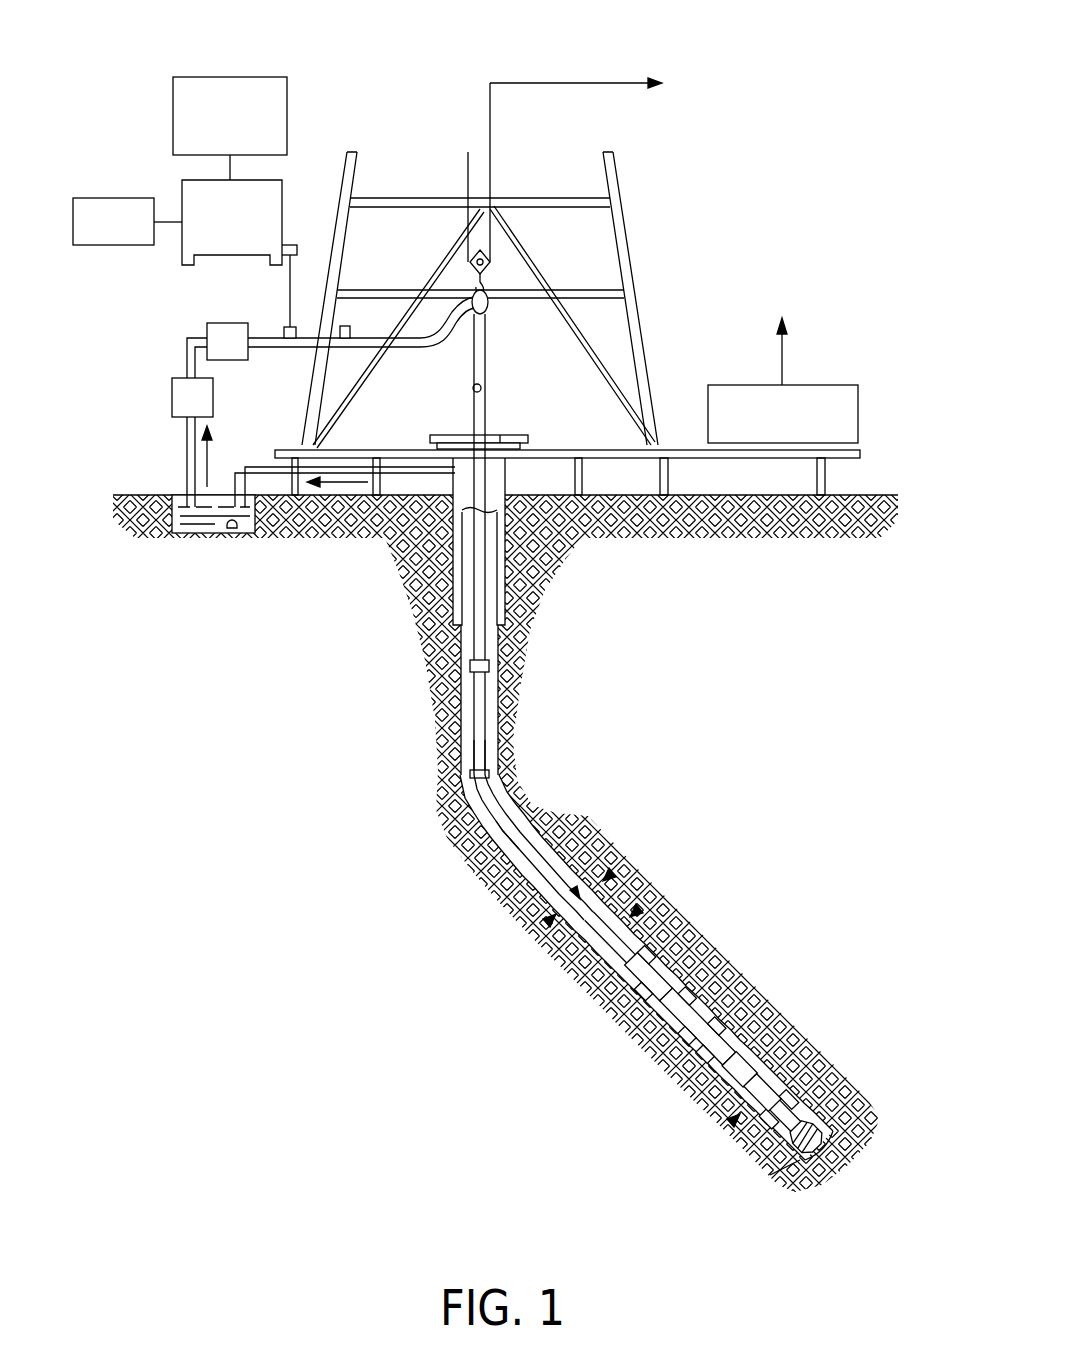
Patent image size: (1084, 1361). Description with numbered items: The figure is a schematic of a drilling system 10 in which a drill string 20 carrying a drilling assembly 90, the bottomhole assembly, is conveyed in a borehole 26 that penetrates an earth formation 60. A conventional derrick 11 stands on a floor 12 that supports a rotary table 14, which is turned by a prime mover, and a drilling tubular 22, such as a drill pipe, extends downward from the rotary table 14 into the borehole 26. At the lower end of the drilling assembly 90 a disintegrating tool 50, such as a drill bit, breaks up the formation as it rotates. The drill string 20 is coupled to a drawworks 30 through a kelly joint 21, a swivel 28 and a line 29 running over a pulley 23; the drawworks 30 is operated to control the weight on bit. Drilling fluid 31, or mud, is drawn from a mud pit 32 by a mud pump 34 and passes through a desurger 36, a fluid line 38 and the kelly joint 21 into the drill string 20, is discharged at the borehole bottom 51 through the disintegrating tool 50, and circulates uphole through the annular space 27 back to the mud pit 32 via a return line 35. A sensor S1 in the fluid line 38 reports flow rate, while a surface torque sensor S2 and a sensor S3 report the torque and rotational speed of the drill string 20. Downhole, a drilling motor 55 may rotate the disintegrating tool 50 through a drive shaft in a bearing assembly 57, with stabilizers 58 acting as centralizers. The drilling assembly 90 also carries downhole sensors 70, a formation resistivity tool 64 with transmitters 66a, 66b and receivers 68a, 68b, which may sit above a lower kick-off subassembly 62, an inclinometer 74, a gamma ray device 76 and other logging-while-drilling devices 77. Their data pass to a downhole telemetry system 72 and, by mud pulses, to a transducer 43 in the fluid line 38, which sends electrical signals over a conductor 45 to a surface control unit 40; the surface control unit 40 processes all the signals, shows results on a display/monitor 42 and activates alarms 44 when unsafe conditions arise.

The drilling system 10 is at (406, 112).
The derrick 11 is at (642, 298).
The floor 12 is at (656, 440).
The rotary table 14 is at (497, 432).
The drill string 20 is at (492, 642).
The kelly joint 21 is at (488, 372).
The drilling tubular 22 is at (461, 690).
The pulley 23 is at (492, 262).
The borehole 26 is at (498, 802).
The annular space 27 is at (514, 832).
The swivel 28 is at (468, 334).
The line 29 is at (490, 175).
The drawworks 30 is at (838, 385).
The drilling fluid 31 is at (172, 520).
The mud pit 32 is at (233, 531).
The mud pump 34 is at (172, 395).
The return line 35 is at (416, 473).
The desurger 36 is at (210, 323).
The fluid line 38 is at (300, 347).
The surface control unit 40 is at (182, 190).
The display/monitor 42 is at (207, 77).
The transducer 43 is at (290, 315).
The alarms 44 is at (130, 246).
The conductor 45 is at (289, 245).
The disintegrating tool 50 is at (838, 1120).
The borehole bottom 51 is at (790, 1176).
The drilling motor 55 is at (638, 908).
The bearing assembly 57 is at (730, 1122).
The stabilizers 58 is at (655, 952).
The earth formation 60 is at (325, 887).
The lower kick-off subassembly 62 is at (777, 1070).
The formation resistivity tool 64 is at (670, 1037).
The transmitter 66a is at (640, 993).
The transmitter 66b is at (688, 1072).
The receiver 68a is at (687, 1033).
The receiver 68b is at (700, 982).
The downhole sensors 70 is at (525, 868).
The downhole telemetry system 72 is at (476, 762).
The inclinometer 74 is at (727, 1010).
The gamma ray device 76 is at (767, 1027).
The logging-while-drilling devices 77 is at (550, 920).
The drilling assembly 90 is at (611, 872).
The sensor S1 is at (346, 326).
The surface torque sensor S2 is at (472, 388).
The sensor S3 is at (505, 437).